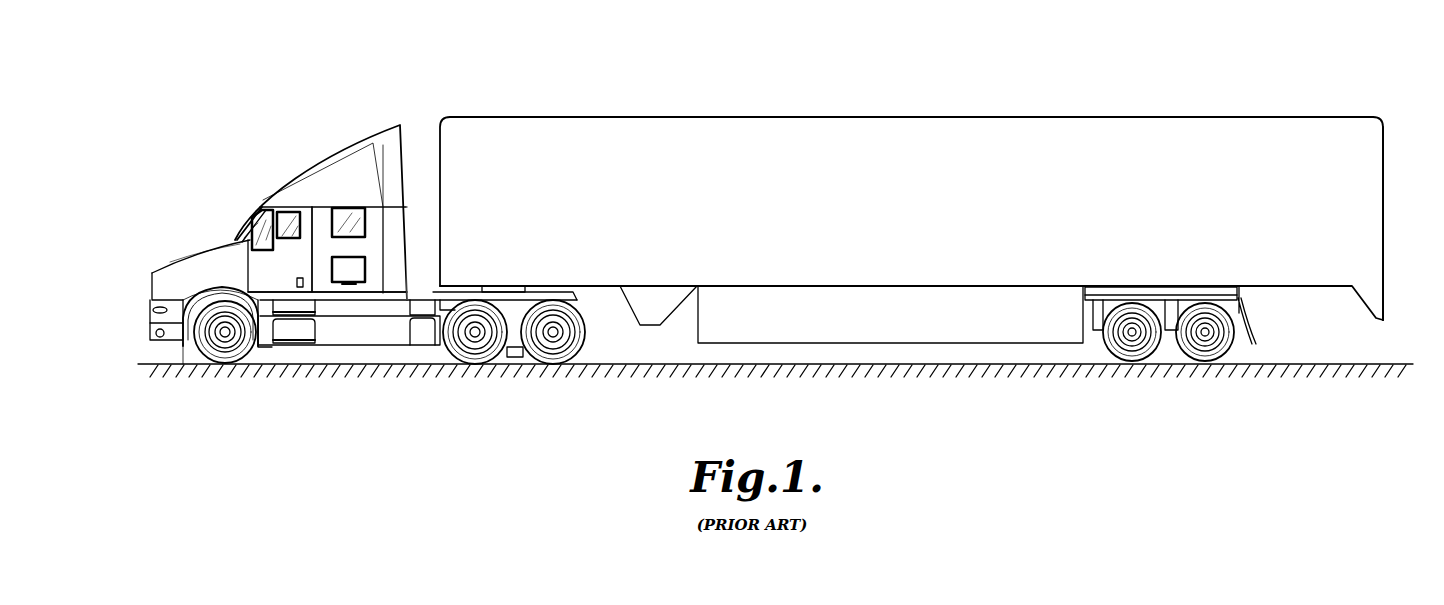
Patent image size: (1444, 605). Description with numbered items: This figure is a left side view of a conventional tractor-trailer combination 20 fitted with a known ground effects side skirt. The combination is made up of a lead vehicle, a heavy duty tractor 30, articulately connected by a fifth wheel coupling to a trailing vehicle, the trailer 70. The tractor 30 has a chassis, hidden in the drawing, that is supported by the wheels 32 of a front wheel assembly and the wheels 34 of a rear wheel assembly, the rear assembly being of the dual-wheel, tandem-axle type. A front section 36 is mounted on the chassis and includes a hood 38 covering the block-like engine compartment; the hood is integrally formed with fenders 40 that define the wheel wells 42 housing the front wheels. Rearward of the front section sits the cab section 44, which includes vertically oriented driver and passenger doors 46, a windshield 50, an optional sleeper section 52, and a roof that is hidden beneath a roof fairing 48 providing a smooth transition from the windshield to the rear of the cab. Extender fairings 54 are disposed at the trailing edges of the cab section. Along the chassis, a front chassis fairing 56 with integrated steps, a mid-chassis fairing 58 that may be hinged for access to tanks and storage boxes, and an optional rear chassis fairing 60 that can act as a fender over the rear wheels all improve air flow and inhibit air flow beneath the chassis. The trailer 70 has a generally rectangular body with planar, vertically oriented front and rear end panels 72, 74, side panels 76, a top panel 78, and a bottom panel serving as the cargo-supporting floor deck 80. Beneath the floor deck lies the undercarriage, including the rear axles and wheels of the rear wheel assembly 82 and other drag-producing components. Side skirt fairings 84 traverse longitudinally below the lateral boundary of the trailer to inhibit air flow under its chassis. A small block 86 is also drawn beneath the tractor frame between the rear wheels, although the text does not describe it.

The tractor-trailer combination 20 is at (360, 91).
The tractor 30 is at (181, 245).
The wheels of front wheel assembly 32 is at (212, 353).
The wheels of rear wheel assembly 34 is at (462, 353).
The front section 36 is at (170, 257).
The hood 38 is at (202, 250).
The fenders 40 is at (185, 346).
The wheel wells 42 is at (253, 342).
The cab section 44 is at (320, 232).
The driver and passenger doors 46 is at (272, 268).
The roof fairing 48 is at (318, 172).
The windshield 50 is at (237, 233).
The sleeper section 52 is at (367, 250).
The extender fairings 54 is at (393, 177).
The front chassis fairing 56 is at (302, 318).
The mid-chassis fairing 58 is at (372, 340).
The rear chassis fairing 60 is at (515, 305).
The front end panel 72 is at (438, 240).
The under-frame block 86 is at (515, 362).
The trailer 70 is at (451, 111).
The rear end panel 74 is at (1383, 185).
The side panels 76 is at (615, 137).
The top panel 78 is at (712, 117).
The cargo-supporting floor deck 80 is at (607, 287).
The rear wheel assembly 82 is at (1172, 354).
The side skirt fairings 84 is at (1062, 322).